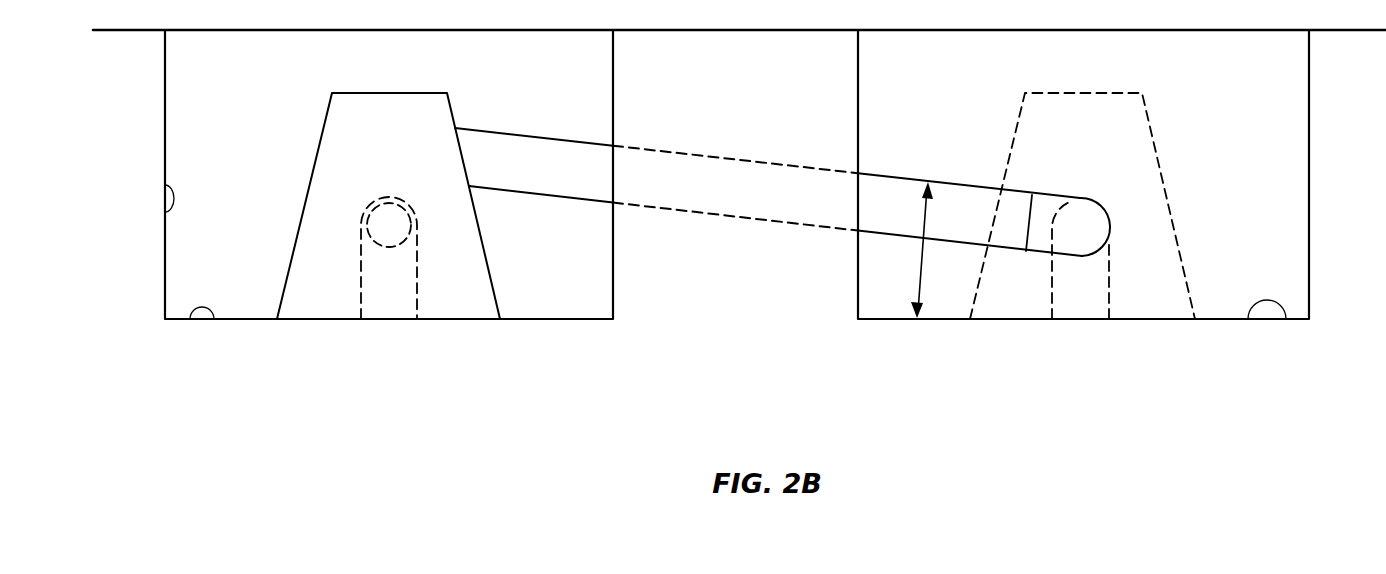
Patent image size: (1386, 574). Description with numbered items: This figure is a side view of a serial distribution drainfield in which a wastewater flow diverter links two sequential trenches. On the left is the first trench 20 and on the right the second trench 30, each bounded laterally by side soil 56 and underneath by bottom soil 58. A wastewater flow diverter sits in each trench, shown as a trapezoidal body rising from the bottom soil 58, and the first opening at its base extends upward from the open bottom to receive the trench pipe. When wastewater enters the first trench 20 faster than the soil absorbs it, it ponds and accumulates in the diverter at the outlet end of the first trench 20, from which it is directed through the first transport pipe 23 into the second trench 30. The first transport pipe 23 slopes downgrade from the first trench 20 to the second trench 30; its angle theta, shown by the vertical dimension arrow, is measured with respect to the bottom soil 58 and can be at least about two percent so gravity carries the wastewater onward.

The first trench 20 is at (334, 232).
The first transport pipe 23 is at (673, 173).
The second trench 30 is at (1083, 228).
The side soil 56 is at (165, 205).
The bottom soil 58 is at (210, 312).